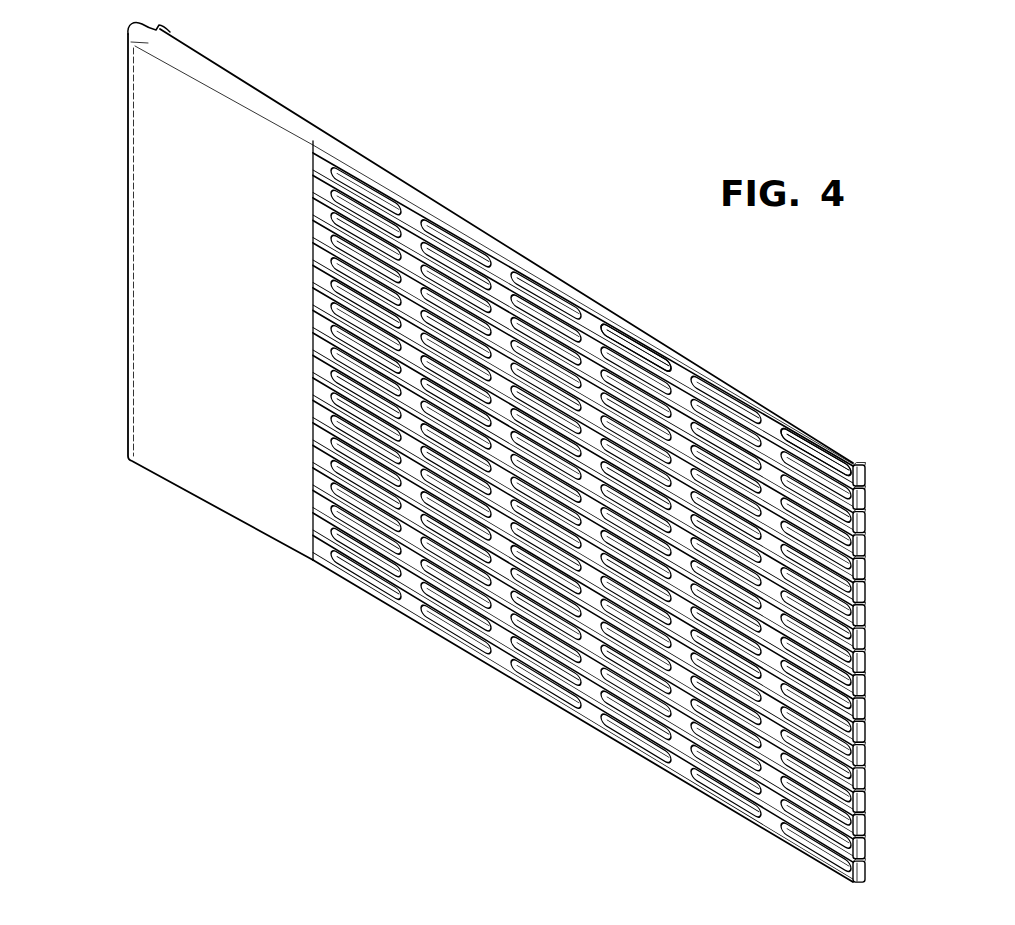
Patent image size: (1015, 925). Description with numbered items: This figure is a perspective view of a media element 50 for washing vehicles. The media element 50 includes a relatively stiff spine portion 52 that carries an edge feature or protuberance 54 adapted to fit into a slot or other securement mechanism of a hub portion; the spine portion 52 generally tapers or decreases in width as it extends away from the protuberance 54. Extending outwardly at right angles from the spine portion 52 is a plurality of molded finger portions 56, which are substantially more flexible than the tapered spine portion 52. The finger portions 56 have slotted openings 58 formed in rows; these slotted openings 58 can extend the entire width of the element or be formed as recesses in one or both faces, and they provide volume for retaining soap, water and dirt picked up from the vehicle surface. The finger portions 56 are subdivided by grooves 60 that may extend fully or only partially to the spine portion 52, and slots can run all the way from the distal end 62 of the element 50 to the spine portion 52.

The media element 50 is at (524, 452).
The spine portion 52 is at (247, 81).
The edge feature or protuberance 54 is at (118, 22).
The finger portions 56 is at (775, 452).
The slotted openings 58 is at (636, 344).
The grooves 60 is at (852, 605).
The distal end 62 is at (899, 521).